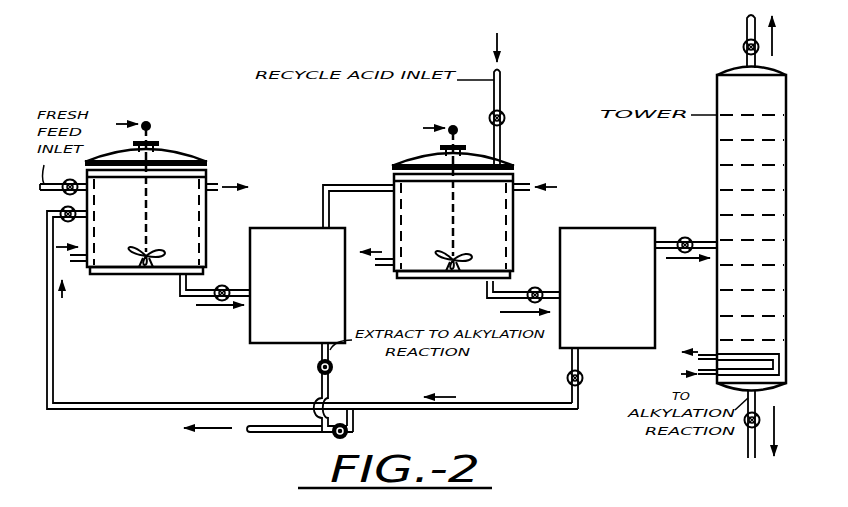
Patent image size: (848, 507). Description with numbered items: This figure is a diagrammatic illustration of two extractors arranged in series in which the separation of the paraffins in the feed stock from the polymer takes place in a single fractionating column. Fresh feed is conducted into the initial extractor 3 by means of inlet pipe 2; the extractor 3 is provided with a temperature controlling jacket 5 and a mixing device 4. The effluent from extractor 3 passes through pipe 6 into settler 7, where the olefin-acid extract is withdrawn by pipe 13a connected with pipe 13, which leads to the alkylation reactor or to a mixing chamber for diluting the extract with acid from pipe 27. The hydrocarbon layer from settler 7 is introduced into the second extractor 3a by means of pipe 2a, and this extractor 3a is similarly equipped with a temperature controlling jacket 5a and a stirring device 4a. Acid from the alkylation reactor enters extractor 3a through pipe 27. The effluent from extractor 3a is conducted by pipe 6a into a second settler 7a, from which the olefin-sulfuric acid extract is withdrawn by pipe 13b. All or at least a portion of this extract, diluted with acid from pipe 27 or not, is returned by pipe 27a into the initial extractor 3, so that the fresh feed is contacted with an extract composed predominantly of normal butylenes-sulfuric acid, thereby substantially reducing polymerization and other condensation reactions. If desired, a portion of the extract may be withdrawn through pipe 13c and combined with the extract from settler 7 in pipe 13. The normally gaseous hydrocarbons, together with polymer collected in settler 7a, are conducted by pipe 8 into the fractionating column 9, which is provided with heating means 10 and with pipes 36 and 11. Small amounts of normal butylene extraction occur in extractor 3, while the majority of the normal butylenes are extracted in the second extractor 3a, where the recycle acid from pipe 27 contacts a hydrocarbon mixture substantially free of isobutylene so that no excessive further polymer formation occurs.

The inlet pipe 2 is at (57, 192).
The pipe 2a is at (330, 185).
The extractor 3 is at (190, 192).
The extractor 3a is at (490, 217).
The mixing device 4 is at (165, 272).
The stirring device 4a is at (428, 276).
The temperature controlling jacket 5 is at (205, 222).
The temperature controlling jacket 5a is at (395, 220).
The pipe 6 is at (177, 300).
The pipe 6a is at (483, 288).
The settler 7 is at (288, 243).
The second settler 7a is at (604, 240).
The pipe 8 is at (668, 243).
The fractionating column 9 is at (722, 152).
The heating means 10 is at (705, 355).
The pipe 11 is at (750, 442).
The pipe 13 is at (252, 426).
The pipe 13a is at (321, 381).
The pipe 13b is at (583, 362).
The pipe 13c is at (339, 413).
The pipe 27 is at (501, 148).
The pipe 27a is at (55, 358).
The pipe 36 is at (746, 42).